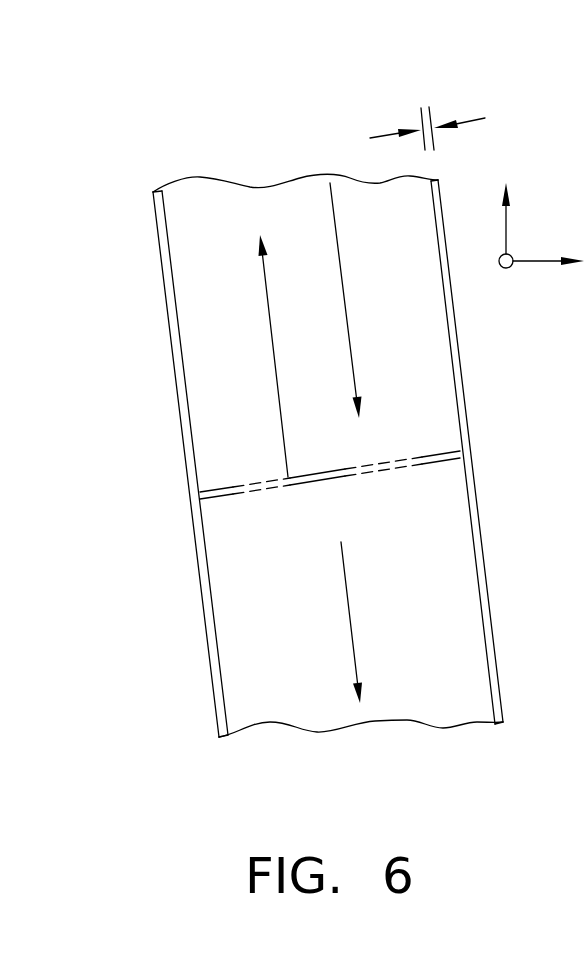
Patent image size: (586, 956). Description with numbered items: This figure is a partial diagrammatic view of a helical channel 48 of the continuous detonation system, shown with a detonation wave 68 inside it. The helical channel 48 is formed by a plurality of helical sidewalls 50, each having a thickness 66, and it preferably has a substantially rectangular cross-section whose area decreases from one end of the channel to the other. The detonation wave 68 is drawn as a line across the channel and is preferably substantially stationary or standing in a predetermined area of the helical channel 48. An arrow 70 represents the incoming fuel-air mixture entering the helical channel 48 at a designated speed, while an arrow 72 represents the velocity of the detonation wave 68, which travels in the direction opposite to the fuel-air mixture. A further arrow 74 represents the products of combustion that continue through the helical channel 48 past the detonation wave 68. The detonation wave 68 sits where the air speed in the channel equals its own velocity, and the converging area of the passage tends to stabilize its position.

The helical channel 48 is at (186, 326).
The helical sidewalls 50 is at (457, 390).
The thickness 66 is at (477, 119).
The detonation wave 68 is at (436, 464).
The arrow 70 is at (344, 290).
The arrow 72 is at (273, 352).
The arrow 74 is at (350, 608).